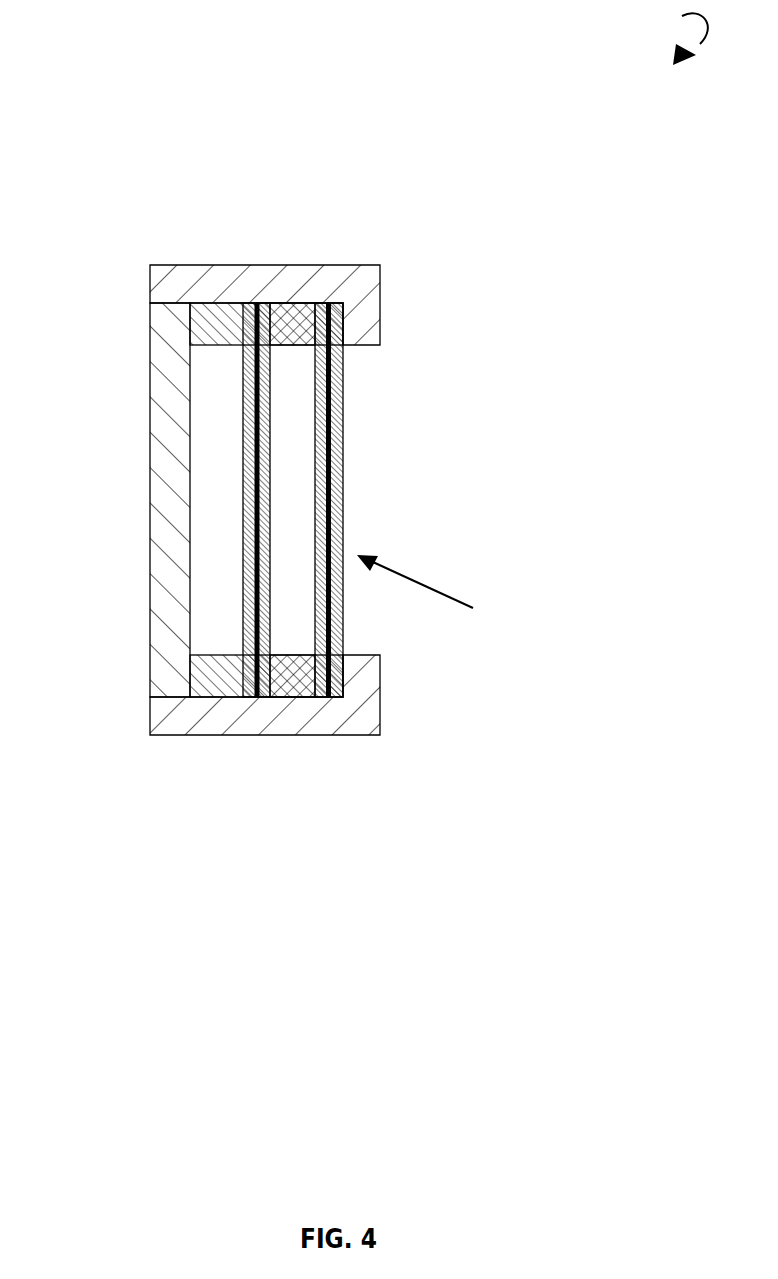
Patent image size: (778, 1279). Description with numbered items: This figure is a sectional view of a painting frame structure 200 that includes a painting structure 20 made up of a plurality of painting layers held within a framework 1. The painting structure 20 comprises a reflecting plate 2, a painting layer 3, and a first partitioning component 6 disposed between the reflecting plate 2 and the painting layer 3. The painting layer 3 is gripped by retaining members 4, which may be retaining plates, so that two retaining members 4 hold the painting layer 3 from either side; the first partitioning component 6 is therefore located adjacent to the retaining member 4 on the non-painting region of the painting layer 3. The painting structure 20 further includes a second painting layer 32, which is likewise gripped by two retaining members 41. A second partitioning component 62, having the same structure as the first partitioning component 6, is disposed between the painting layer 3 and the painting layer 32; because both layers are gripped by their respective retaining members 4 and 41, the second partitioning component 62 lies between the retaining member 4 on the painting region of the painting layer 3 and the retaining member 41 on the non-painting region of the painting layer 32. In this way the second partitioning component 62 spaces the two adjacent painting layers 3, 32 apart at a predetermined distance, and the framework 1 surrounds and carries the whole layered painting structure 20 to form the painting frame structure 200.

The framework 1 is at (218, 278).
The reflecting plate 2 is at (170, 498).
The painting layer 3 is at (255, 673).
The retaining members 4 is at (270, 587).
The first partitioning component 6 is at (213, 310).
The second partitioning component 62 is at (335, 298).
The painting structure 20 is at (438, 592).
The painting layer 32 is at (343, 480).
The retaining members 41 is at (323, 587).
The painting frame structure 200 is at (669, 36).